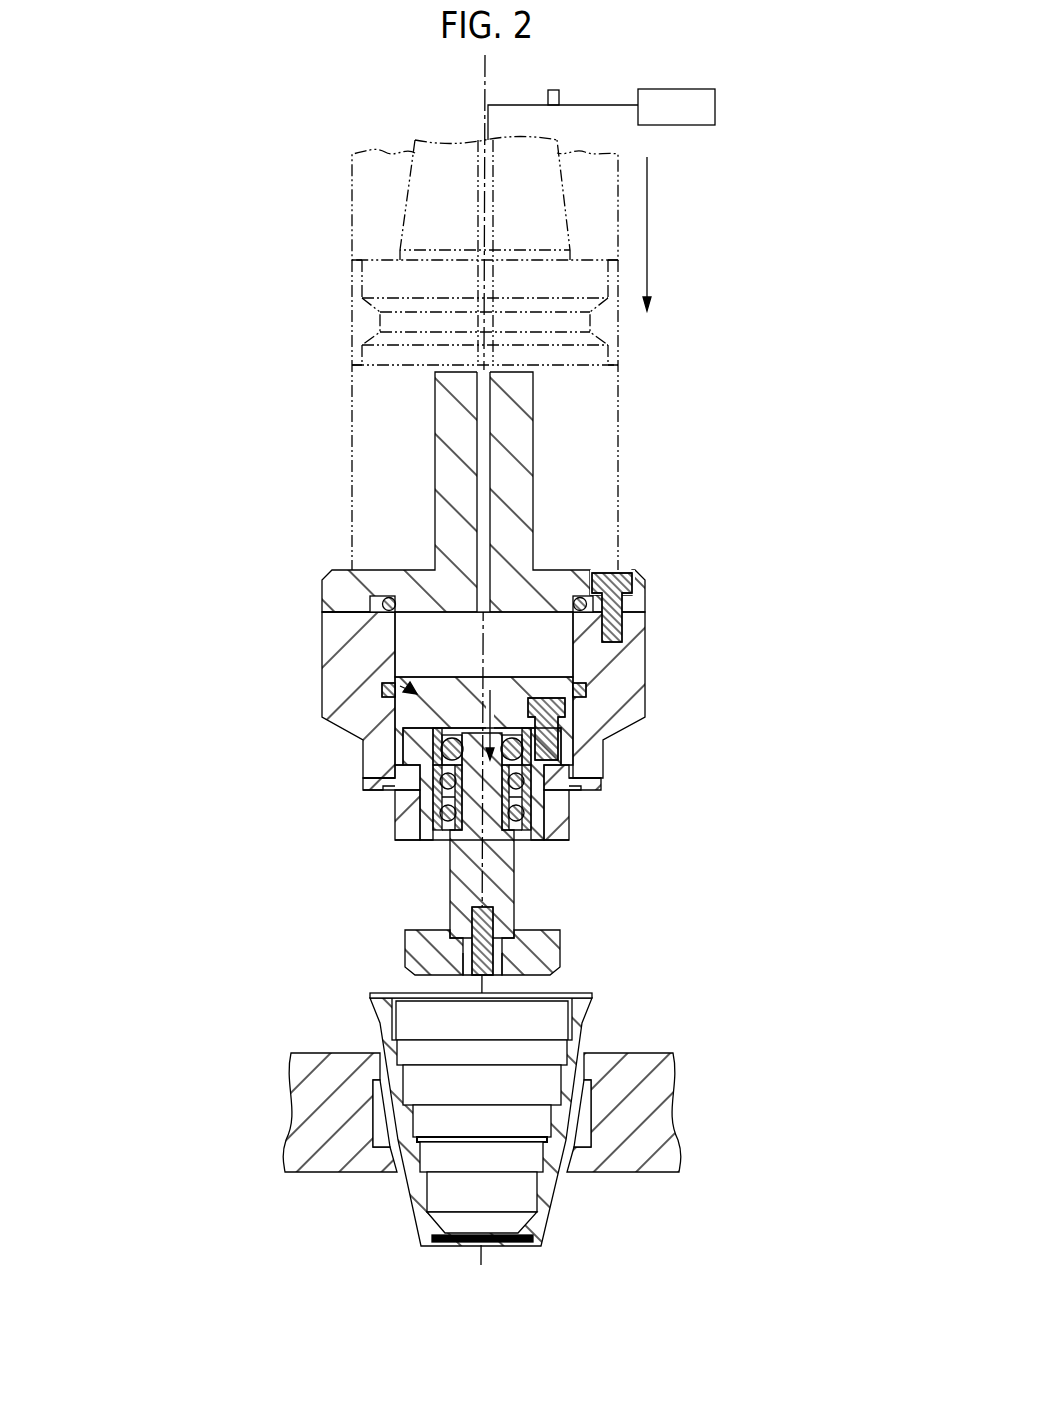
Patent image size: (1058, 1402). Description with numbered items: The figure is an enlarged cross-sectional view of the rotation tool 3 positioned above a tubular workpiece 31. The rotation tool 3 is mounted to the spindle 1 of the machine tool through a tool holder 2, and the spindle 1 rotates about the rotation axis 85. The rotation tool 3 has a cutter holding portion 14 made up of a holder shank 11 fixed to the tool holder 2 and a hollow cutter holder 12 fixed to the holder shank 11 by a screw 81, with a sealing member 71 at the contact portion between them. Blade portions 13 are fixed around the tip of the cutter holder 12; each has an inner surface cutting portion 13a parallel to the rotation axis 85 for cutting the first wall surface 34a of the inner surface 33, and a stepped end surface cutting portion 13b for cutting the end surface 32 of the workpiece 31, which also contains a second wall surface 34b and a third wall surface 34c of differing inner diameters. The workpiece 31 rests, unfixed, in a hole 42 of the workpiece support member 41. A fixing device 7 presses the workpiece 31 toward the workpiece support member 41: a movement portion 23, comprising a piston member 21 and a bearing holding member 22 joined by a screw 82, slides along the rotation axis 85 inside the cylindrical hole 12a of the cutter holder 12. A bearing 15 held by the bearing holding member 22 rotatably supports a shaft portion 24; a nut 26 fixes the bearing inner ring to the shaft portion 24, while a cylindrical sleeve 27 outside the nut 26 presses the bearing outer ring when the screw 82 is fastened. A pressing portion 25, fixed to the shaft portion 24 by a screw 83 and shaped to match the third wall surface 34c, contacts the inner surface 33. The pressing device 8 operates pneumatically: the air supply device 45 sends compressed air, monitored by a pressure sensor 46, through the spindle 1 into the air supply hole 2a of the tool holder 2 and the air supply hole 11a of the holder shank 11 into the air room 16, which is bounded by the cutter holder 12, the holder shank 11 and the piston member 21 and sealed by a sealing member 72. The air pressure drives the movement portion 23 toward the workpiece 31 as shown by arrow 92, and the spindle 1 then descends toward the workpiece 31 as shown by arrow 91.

The spindle 1 is at (352, 187).
The tool holder 2 is at (440, 415).
The air supply hole 2a is at (477, 323).
The rotation tool 3 is at (468, 672).
The fixing device 7 is at (400, 686).
The pressing device 8 is at (595, 90).
The holder shank 11 is at (449, 491).
The air supply hole 11a is at (473, 460).
The cutter holder 12 is at (449, 672).
The cylindrical hole 12a is at (407, 653).
The blade portion 13 is at (420, 828).
The inner surface cutting portion 13a is at (393, 823).
The end surface cutting portion 13b is at (367, 789).
The cutter holding portion 14 is at (458, 574).
The bearing 15 is at (533, 820).
The air room 16 is at (537, 630).
The piston member 21 is at (468, 700).
The bearing holding member 22 is at (449, 784).
The movement portion 23 is at (453, 738).
The shaft portion 24 is at (476, 854).
The pressing portion 25 is at (427, 945).
The nut 26 is at (533, 790).
The sleeve 27 is at (413, 768).
The workpiece 31 is at (566, 1130).
The end surface 32 is at (588, 994).
The inner surface 33 is at (523, 1100).
The first wall surface 34a is at (558, 1028).
The second wall surface 34b is at (555, 1053).
The third wall surface 34c is at (547, 1087).
The workpiece support member 41 is at (454, 1139).
The hole 42 is at (390, 1153).
The air supply device 45 is at (715, 107).
The pressure sensor 46 is at (559, 95).
The sealing member 71 is at (591, 598).
The sealing member 72 is at (587, 690).
The screw 81 is at (633, 588).
The screw 82 is at (555, 707).
The screw 83 is at (493, 908).
The rotation axis 85 is at (485, 93).
The arrow 91 is at (648, 230).
The arrow 92 is at (590, 672).